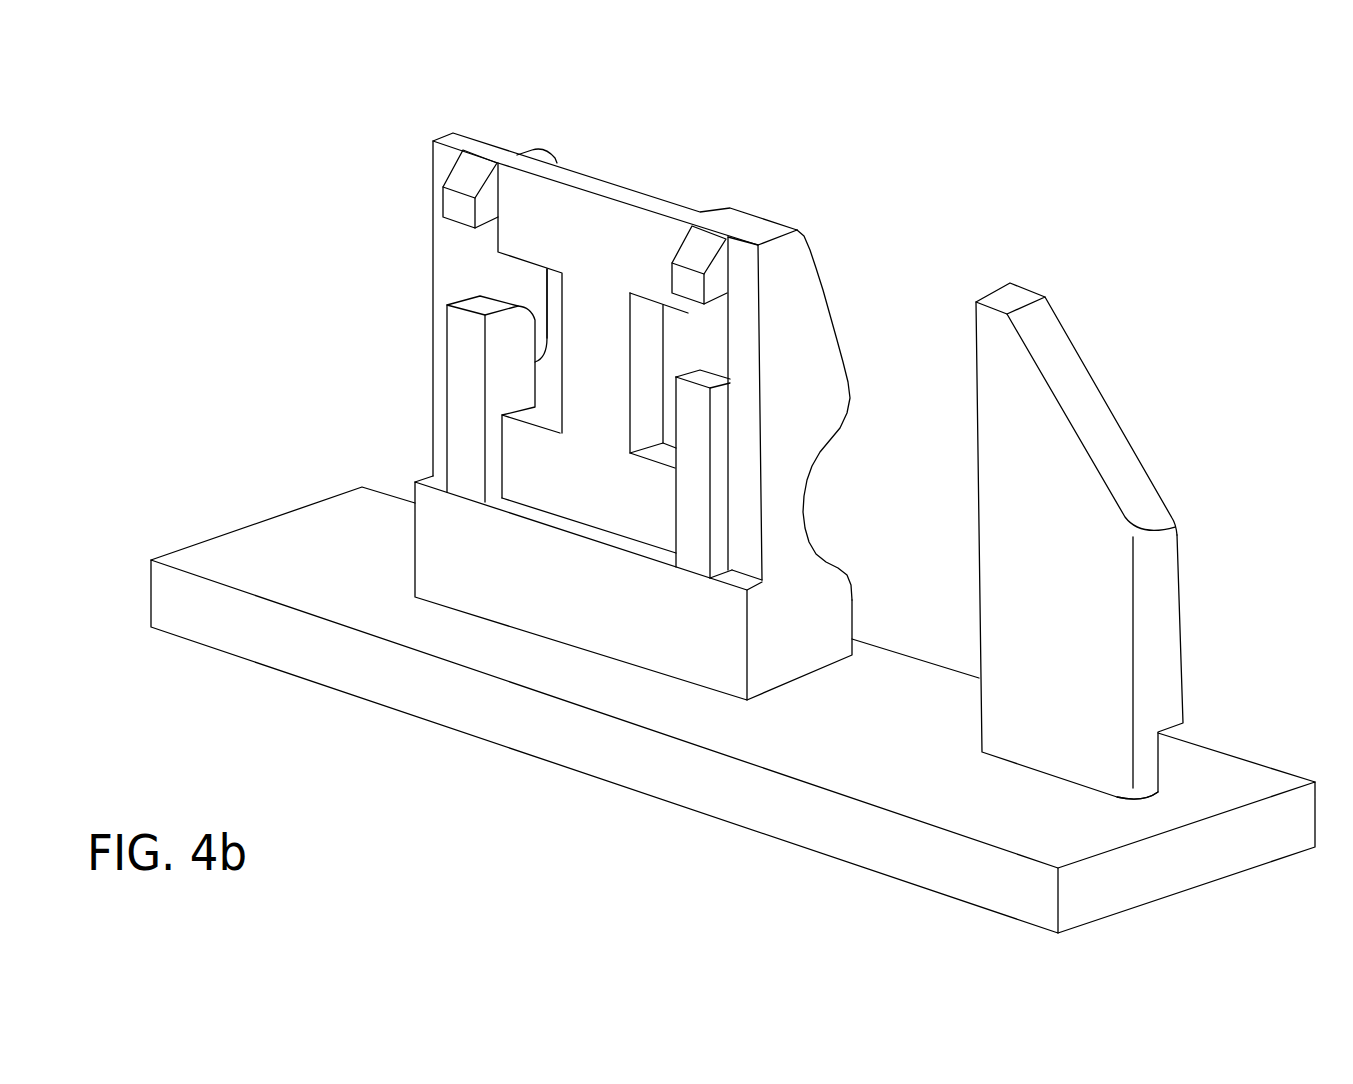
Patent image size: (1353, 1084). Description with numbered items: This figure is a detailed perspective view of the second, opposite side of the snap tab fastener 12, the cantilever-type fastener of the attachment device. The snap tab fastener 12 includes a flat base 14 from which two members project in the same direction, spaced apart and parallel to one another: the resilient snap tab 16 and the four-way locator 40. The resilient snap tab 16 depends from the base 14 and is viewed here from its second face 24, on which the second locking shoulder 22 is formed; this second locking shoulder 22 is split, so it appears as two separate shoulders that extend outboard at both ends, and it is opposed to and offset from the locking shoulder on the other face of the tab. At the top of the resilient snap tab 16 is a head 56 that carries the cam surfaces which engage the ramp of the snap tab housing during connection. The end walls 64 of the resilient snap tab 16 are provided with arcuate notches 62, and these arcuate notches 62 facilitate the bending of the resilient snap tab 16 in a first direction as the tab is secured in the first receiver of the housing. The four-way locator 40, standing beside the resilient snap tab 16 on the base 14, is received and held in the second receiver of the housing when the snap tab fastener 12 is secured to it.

The snap tab fastener 12 is at (522, 805).
The base 14 is at (748, 797).
The resilient snap tab 16 is at (563, 477).
The second locking shoulder 22 is at (465, 180).
The second face 24 is at (546, 232).
The four-way locator 40 is at (977, 440).
The head 56 is at (483, 148).
The arcuate notches 62 is at (805, 530).
The end walls 64 is at (810, 318).